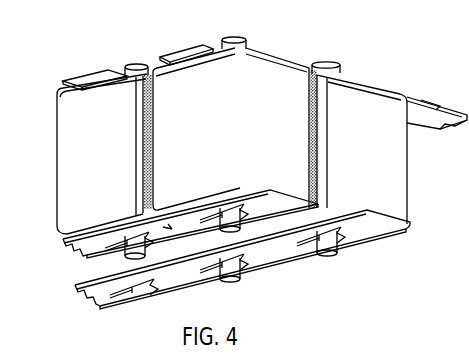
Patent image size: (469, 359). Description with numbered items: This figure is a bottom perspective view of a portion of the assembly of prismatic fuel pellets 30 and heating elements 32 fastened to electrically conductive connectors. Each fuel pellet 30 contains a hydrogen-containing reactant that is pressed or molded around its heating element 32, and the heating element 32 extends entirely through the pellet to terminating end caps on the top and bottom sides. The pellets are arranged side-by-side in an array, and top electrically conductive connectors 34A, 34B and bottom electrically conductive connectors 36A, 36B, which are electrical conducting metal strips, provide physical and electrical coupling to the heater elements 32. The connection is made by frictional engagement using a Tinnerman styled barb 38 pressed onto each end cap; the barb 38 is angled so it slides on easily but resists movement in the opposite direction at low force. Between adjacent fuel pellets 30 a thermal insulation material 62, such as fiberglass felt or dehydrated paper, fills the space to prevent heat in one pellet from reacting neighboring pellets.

The fuel pellet 30 is at (104, 161).
The heating element 32 is at (137, 65).
The top electrically conductive connector 34A is at (177, 43).
The top electrically conductive connector 34B is at (82, 72).
The bottom electrically conductive connector 36A is at (88, 248).
The bottom electrically conductive connector 36B is at (107, 302).
The Tinnerman styled barb 38 is at (427, 128).
The thermal insulation material 62 is at (148, 106).